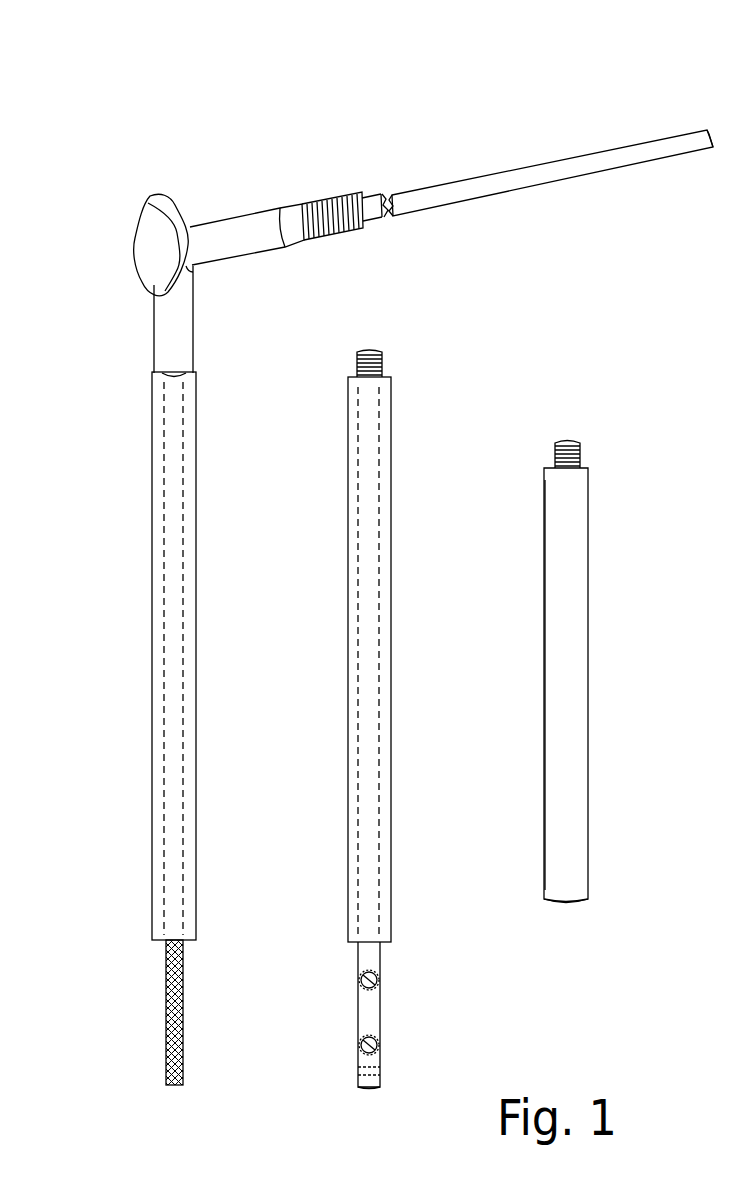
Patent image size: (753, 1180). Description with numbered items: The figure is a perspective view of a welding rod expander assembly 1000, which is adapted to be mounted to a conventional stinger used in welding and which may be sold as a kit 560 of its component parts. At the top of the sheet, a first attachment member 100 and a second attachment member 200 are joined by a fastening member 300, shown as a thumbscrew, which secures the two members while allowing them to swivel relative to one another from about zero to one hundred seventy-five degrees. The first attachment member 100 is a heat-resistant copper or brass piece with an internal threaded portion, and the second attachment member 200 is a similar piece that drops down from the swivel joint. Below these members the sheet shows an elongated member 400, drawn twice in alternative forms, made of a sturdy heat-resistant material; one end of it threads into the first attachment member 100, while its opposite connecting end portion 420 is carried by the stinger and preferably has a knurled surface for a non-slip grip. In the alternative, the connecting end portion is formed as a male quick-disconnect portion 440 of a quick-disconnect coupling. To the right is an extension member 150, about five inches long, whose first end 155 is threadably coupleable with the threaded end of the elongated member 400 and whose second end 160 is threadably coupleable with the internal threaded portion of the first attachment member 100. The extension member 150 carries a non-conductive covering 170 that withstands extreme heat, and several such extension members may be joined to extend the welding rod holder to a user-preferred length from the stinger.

The welding rod expander assembly 1000 is at (205, 85).
The kit 560 is at (190, 118).
The first attachment member 100 is at (235, 212).
The second attachment member 200 is at (197, 335).
The fastening member 300 is at (145, 218).
The elongated member 400 is at (150, 677).
The connecting end portion 420 is at (166, 1035).
The male quick-disconnect portion 440 is at (382, 1019).
The extension member 150 is at (588, 687).
The second end 160 is at (573, 438).
The non-conductive covering 170 is at (588, 800).
The first end 155 is at (570, 903).